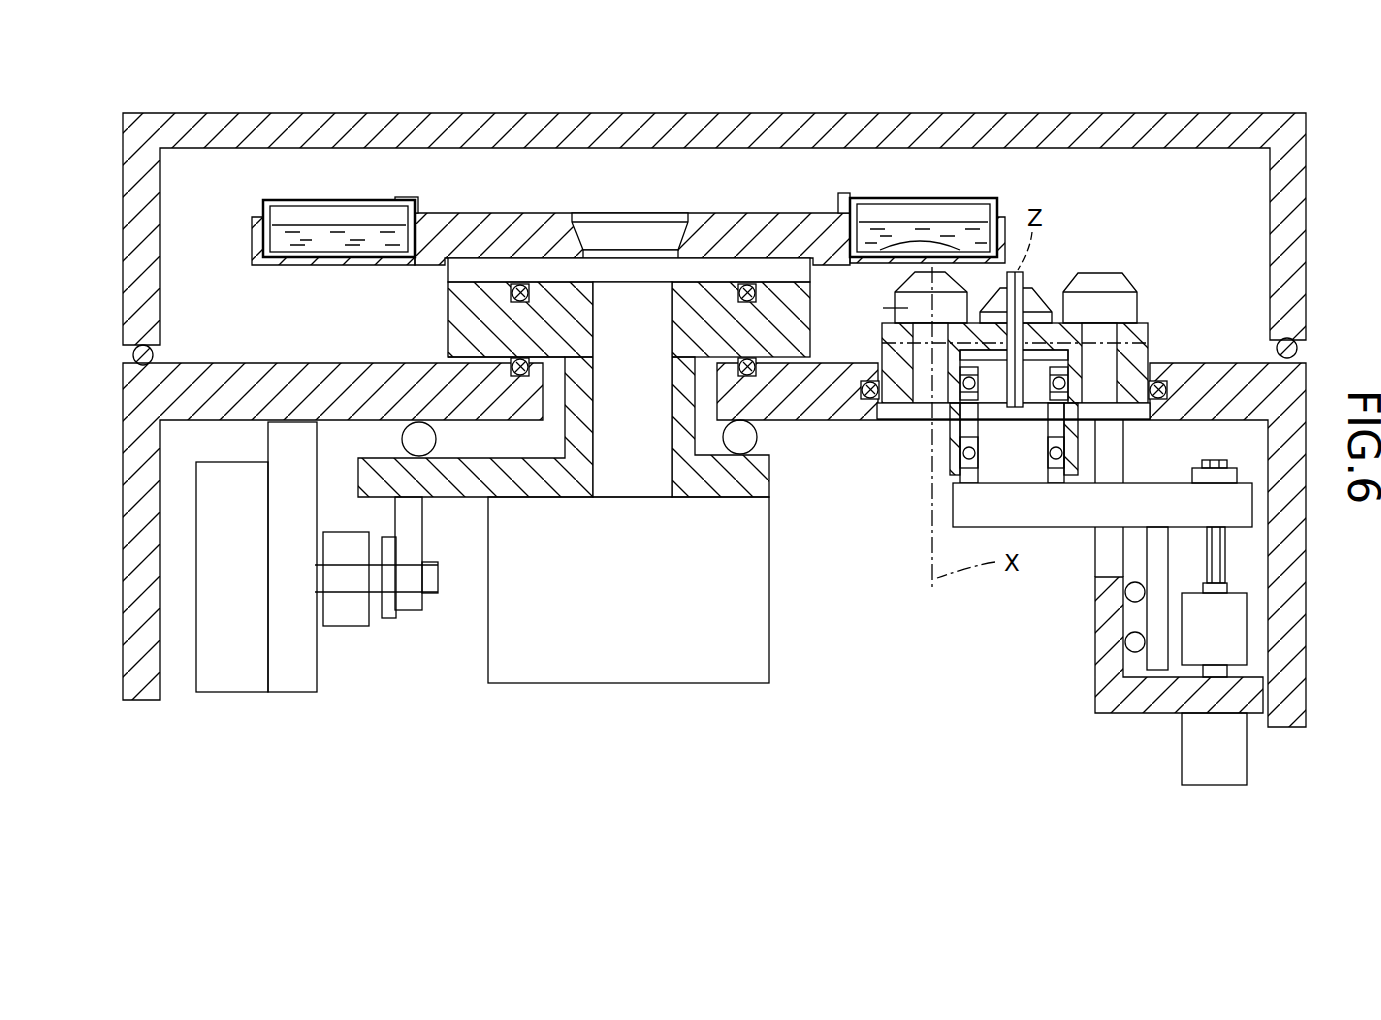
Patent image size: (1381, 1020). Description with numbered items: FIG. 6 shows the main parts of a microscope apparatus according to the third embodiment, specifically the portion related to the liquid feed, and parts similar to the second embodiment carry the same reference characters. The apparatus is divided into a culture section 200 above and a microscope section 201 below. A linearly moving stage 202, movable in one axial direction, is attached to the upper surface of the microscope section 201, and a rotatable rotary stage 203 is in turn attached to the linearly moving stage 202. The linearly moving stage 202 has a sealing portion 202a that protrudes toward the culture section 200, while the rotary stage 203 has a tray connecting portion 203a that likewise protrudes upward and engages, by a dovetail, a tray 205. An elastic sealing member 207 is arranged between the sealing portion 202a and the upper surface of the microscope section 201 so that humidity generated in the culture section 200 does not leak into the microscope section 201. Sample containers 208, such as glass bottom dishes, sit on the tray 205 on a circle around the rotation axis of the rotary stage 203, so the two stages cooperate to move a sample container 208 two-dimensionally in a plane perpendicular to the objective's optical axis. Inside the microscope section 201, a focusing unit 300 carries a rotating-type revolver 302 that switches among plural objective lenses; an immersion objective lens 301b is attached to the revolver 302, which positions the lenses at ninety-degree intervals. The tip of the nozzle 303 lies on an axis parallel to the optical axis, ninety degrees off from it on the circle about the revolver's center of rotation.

The culture section 200 is at (100, 113).
The microscope section 201 is at (100, 365).
The linearly moving stage 202 is at (462, 487).
The sealing portion 202a is at (490, 305).
The rotary stage 203 is at (609, 490).
The tray connecting portion 203a is at (551, 265).
The tray 205 is at (483, 230).
The elastic sealing member 207 is at (500, 353).
The sample container 208 is at (330, 198).
The focusing unit 300 is at (1068, 518).
The immersion objective lens 301b is at (1105, 276).
The revolver 302 is at (1150, 335).
The nozzle 303 is at (1025, 285).